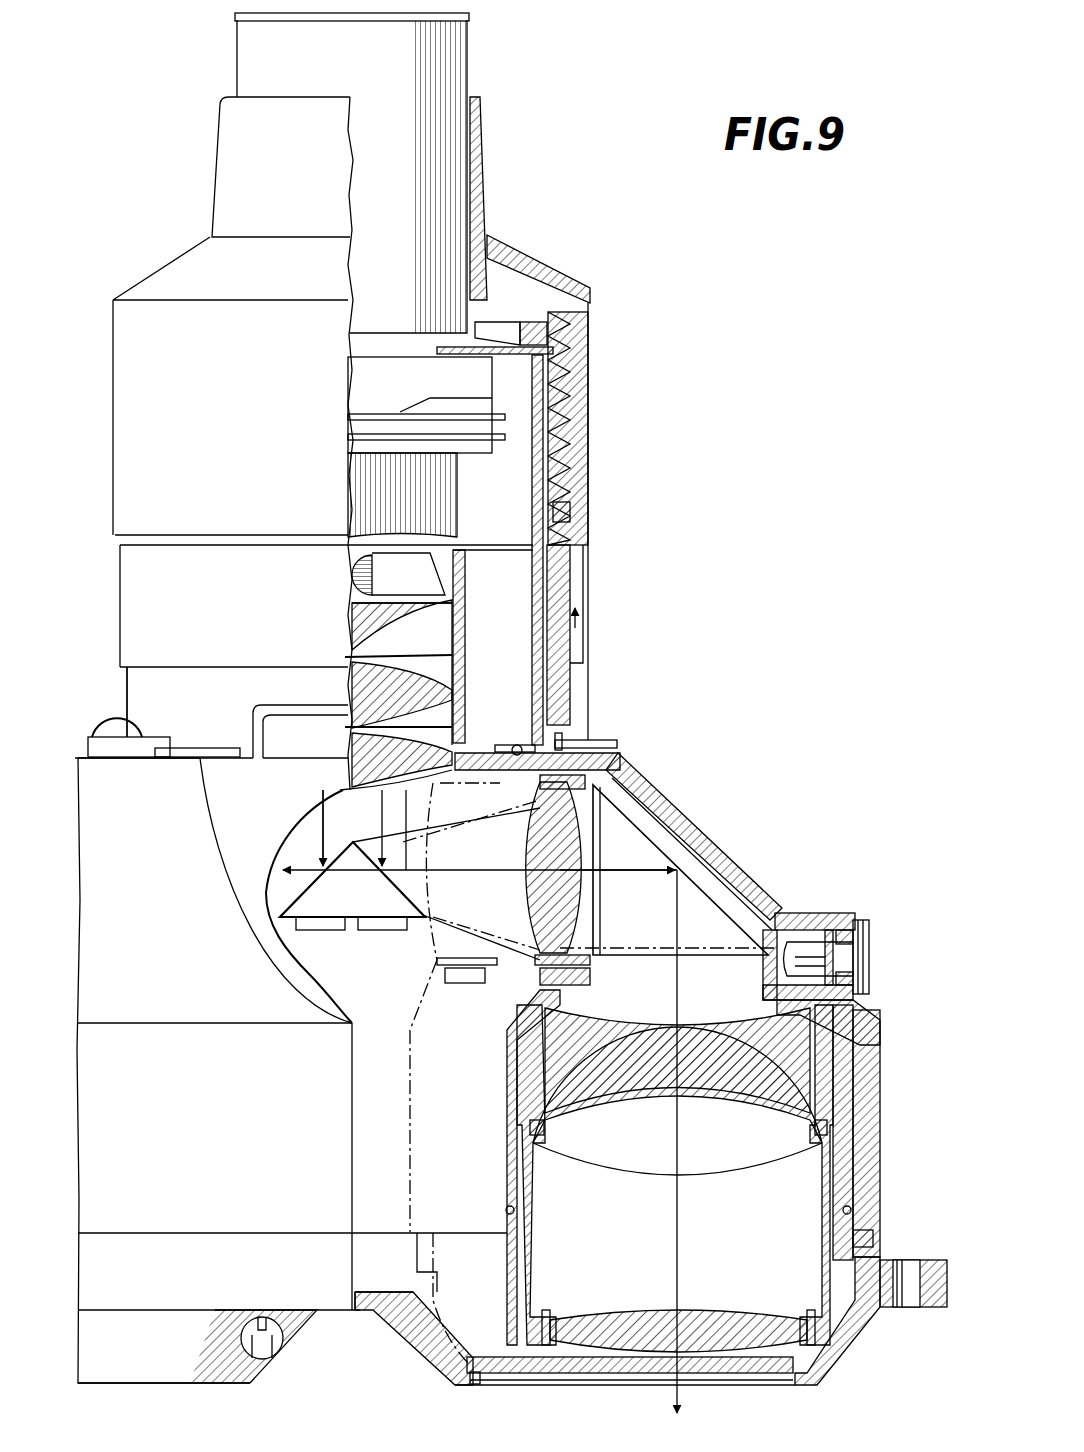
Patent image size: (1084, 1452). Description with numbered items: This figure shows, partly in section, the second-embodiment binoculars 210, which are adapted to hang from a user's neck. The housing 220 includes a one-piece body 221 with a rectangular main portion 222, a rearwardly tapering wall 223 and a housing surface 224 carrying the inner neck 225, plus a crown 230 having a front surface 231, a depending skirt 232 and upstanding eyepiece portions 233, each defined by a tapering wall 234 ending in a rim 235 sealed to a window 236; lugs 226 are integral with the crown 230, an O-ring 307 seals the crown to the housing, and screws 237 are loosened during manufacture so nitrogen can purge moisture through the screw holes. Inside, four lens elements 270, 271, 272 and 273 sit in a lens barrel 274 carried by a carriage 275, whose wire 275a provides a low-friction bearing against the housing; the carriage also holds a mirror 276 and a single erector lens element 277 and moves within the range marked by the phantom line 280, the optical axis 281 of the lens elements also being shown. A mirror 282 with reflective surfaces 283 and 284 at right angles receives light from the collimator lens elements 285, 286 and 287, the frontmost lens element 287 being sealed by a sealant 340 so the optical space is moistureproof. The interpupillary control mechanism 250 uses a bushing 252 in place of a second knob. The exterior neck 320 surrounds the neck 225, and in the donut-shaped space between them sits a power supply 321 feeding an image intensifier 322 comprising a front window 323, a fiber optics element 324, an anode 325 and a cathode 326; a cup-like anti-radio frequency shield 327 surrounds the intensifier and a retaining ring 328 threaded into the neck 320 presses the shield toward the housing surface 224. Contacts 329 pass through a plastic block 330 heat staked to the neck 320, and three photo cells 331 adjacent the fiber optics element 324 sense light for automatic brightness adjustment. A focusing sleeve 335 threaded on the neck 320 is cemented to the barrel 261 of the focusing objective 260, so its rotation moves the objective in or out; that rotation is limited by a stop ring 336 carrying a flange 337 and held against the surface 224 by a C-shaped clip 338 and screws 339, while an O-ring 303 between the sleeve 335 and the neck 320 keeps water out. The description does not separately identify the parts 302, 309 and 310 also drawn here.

The binoculars 210 is at (800, 507).
The housing 220 is at (748, 800).
The one-piece body 221 is at (690, 802).
The main portion 222 is at (870, 1160).
The wall 223 is at (750, 896).
The housing surface 224 is at (600, 743).
The neck 225 is at (466, 606).
The lugs 226 is at (918, 1300).
The crown 230 is at (438, 1376).
The front surface 231 is at (372, 1315).
The depending skirt 232 is at (860, 1322).
The eyepiece portions 233 is at (478, 1383).
The wall 234 is at (415, 1352).
The rim 235 is at (482, 1381).
The window 236 is at (655, 1375).
The screws 237 is at (272, 1350).
The interpupillary control mechanism 250 is at (868, 920).
The bushing 252 is at (872, 962).
The focusing objective 260 is at (472, 60).
The barrel 261 is at (438, 102).
The lens element 270 is at (626, 1320).
The lens element 271 is at (760, 1240).
The lens element 272 is at (800, 1121).
The lens element 273 is at (828, 1046).
The lens barrel 274 is at (828, 1129).
The carriage 275 is at (845, 1082).
The wire 275a is at (852, 1210).
The mirror 276 is at (710, 886).
The lens element 277 is at (580, 925).
The phantom line 280 is at (425, 1100).
The optical axis 281 is at (680, 1393).
The mirror 282 is at (365, 932).
The reflective surface 283 is at (310, 931).
The reflective surface 284 is at (385, 931).
The lens element 285 is at (440, 746).
The lens element 286 is at (440, 700).
The frontmost lens element 287 is at (440, 641).
The thread 302 is at (572, 522).
The O-ring 303 is at (572, 512).
The O-ring 307 is at (875, 1239).
The bearing 309 is at (840, 912).
The washer 310 is at (840, 930).
The exterior neck 320 is at (572, 600).
The power supply 321 is at (545, 652).
The image intensifier 322 is at (520, 449).
The front window 323 is at (375, 378).
The fiber optics element 324 is at (445, 497).
The anode 325 is at (360, 417).
The cathode 326 is at (360, 437).
The anti-radio frequency shield 327 is at (555, 350).
The retaining ring 328 is at (542, 300).
The contacts 329 is at (563, 741).
The plastic block 330 is at (525, 748).
The photo cells 331 is at (352, 577).
The focusing sleeve 335 is at (590, 418).
The stop ring 336 is at (138, 680).
The flange 337 is at (172, 748).
The C-shaped clip 338 is at (118, 762).
The screws 339 is at (112, 716).
The sealant 340 is at (467, 582).